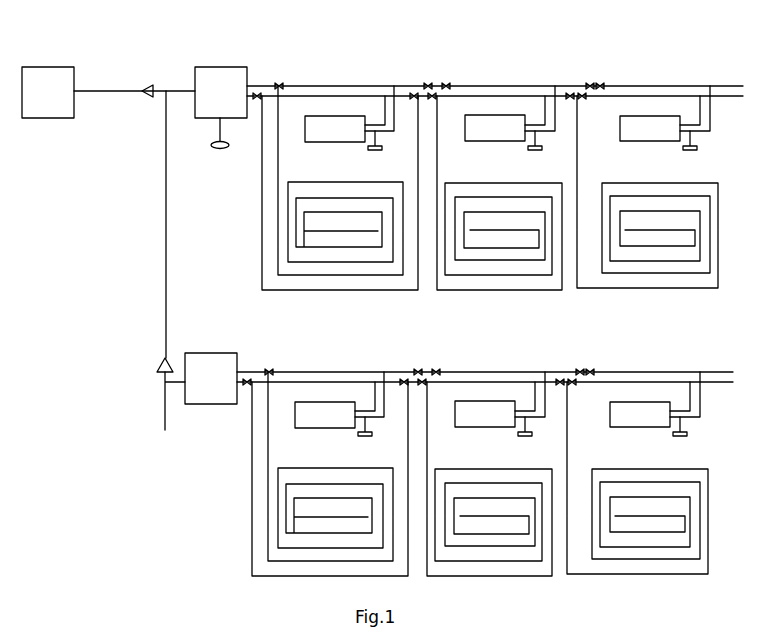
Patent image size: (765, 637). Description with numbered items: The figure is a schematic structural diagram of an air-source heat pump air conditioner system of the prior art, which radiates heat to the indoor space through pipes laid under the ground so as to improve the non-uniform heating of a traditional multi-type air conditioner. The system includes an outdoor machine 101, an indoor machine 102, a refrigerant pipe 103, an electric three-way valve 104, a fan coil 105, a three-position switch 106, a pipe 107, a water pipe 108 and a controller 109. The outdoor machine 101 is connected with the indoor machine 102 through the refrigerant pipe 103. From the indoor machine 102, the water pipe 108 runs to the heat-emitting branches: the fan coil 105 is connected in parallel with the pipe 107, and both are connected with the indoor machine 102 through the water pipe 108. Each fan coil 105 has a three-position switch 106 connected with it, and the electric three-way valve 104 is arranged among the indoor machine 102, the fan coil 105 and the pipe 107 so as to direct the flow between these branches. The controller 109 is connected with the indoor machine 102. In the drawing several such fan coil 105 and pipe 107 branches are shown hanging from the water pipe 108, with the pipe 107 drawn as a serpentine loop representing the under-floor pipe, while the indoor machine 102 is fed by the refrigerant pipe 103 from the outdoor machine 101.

The outdoor machine 101 is at (50, 67).
The indoor machine 102 is at (222, 67).
The refrigerant pipe 103 is at (103, 91).
The electric three-way valve 104 is at (279, 87).
The fan coil 105 is at (318, 142).
The three-position switch 106 is at (376, 149).
The pipe 107 is at (332, 290).
The water pipe 108 is at (345, 87).
The controller 109 is at (215, 145).